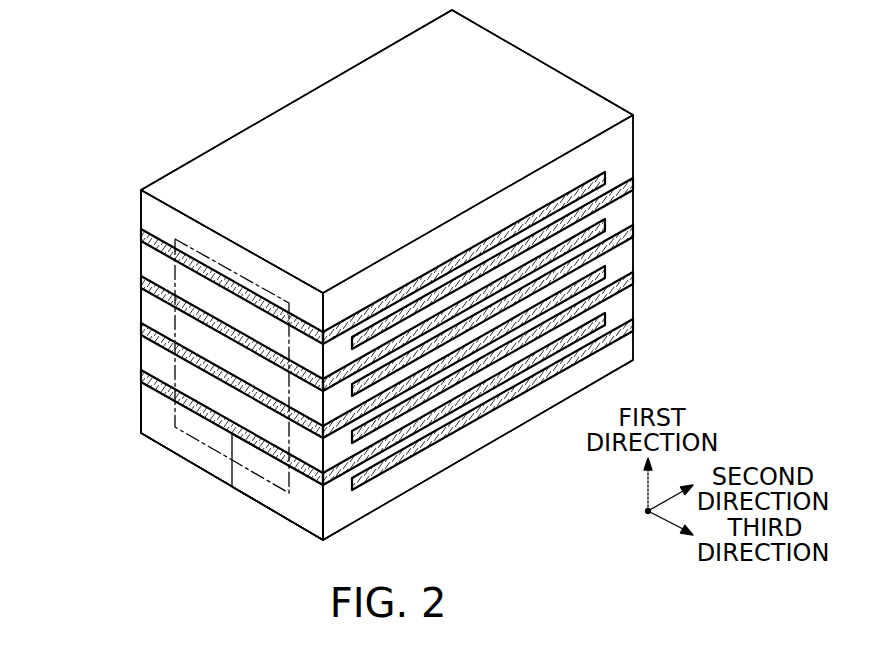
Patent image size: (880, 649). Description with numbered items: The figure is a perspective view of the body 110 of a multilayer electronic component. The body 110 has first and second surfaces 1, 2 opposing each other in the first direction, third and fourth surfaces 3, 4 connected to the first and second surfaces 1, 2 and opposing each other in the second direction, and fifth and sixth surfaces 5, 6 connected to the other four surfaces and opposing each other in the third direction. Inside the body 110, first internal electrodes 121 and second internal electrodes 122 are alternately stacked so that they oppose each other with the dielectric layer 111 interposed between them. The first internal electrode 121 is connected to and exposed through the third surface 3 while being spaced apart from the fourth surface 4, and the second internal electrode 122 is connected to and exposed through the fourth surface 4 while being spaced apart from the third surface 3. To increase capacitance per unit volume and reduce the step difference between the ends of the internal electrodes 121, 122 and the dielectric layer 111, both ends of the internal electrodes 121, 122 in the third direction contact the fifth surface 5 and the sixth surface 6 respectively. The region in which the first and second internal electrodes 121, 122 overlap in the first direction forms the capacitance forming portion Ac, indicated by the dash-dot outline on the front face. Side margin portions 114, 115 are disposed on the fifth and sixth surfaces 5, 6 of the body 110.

The body 110 is at (145, 28).
The first surface 1 is at (463, 444).
The second surface 2 is at (366, 79).
The third surface 3 is at (204, 431).
The fourth surface 4 is at (570, 105).
The fifth surface 5 is at (241, 152).
The sixth surface 6 is at (588, 349).
The dielectric layer 111 is at (167, 308).
The side margin portion 114 is at (152, 399).
The side margin portion 115 is at (310, 488).
The first internal electrode 121 is at (190, 262).
The second internal electrode 122 is at (607, 197).
The capacitance forming portion Ac is at (234, 470).